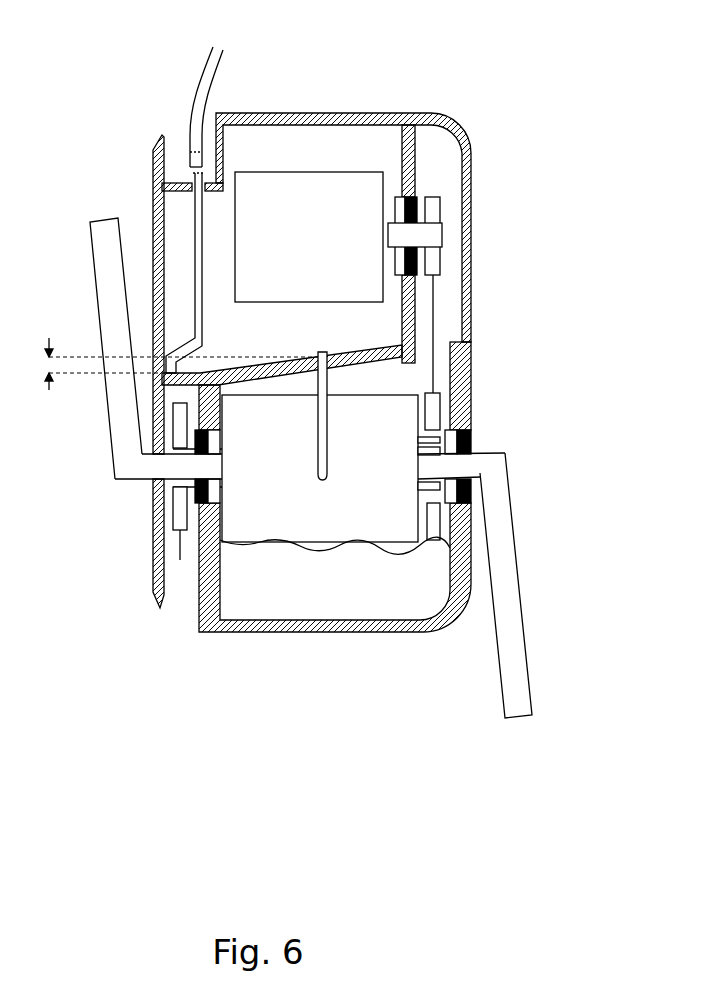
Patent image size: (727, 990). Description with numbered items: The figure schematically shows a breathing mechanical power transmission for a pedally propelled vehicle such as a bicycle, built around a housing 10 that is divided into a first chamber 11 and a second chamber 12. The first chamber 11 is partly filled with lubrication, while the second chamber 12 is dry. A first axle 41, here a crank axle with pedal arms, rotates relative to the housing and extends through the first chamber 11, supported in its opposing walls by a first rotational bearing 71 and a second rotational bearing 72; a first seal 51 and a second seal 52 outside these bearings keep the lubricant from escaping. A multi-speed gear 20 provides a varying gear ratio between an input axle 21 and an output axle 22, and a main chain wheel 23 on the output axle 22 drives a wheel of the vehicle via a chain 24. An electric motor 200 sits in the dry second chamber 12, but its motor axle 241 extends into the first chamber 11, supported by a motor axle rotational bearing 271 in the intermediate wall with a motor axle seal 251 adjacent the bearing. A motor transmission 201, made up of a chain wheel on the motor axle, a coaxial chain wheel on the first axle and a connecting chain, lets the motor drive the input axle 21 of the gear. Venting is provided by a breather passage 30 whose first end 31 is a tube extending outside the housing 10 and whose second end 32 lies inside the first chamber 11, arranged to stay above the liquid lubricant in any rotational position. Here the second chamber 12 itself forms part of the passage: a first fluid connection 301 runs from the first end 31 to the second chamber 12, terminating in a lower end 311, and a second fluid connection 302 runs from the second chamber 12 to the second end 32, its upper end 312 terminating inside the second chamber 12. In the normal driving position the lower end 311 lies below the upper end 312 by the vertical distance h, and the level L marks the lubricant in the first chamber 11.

The housing 10 is at (322, 113).
The first chamber 11 is at (335, 487).
The second chamber 12 is at (342, 143).
The electric motor 200 is at (281, 199).
The multi-speed gear 20 is at (385, 443).
The breather passage 30 is at (193, 258).
The first fluid connection 301 is at (195, 328).
The lower end 311 is at (163, 355).
The first end 31 is at (220, 55).
The motor axle rotational bearing 271 is at (402, 202).
The motor axle seal 251 is at (415, 200).
The motor axle 241 is at (432, 232).
The motor transmission 201 is at (433, 318).
The input axle 21 is at (425, 443).
The first rotational bearing 71 is at (452, 428).
The first seal 51 is at (470, 430).
The upper end 312 is at (327, 357).
The second fluid connection 302 is at (465, 479).
The second end 32 is at (330, 470).
The main chain wheel 23 is at (185, 432).
The output axle 22 is at (183, 452).
The first axle 41 is at (157, 468).
The second seal 52 is at (197, 498).
The second rotational bearing 72 is at (180, 560).
The chain 24 is at (165, 590).
The vertical distance h is at (165, 364).
The liquid level L is at (260, 543).